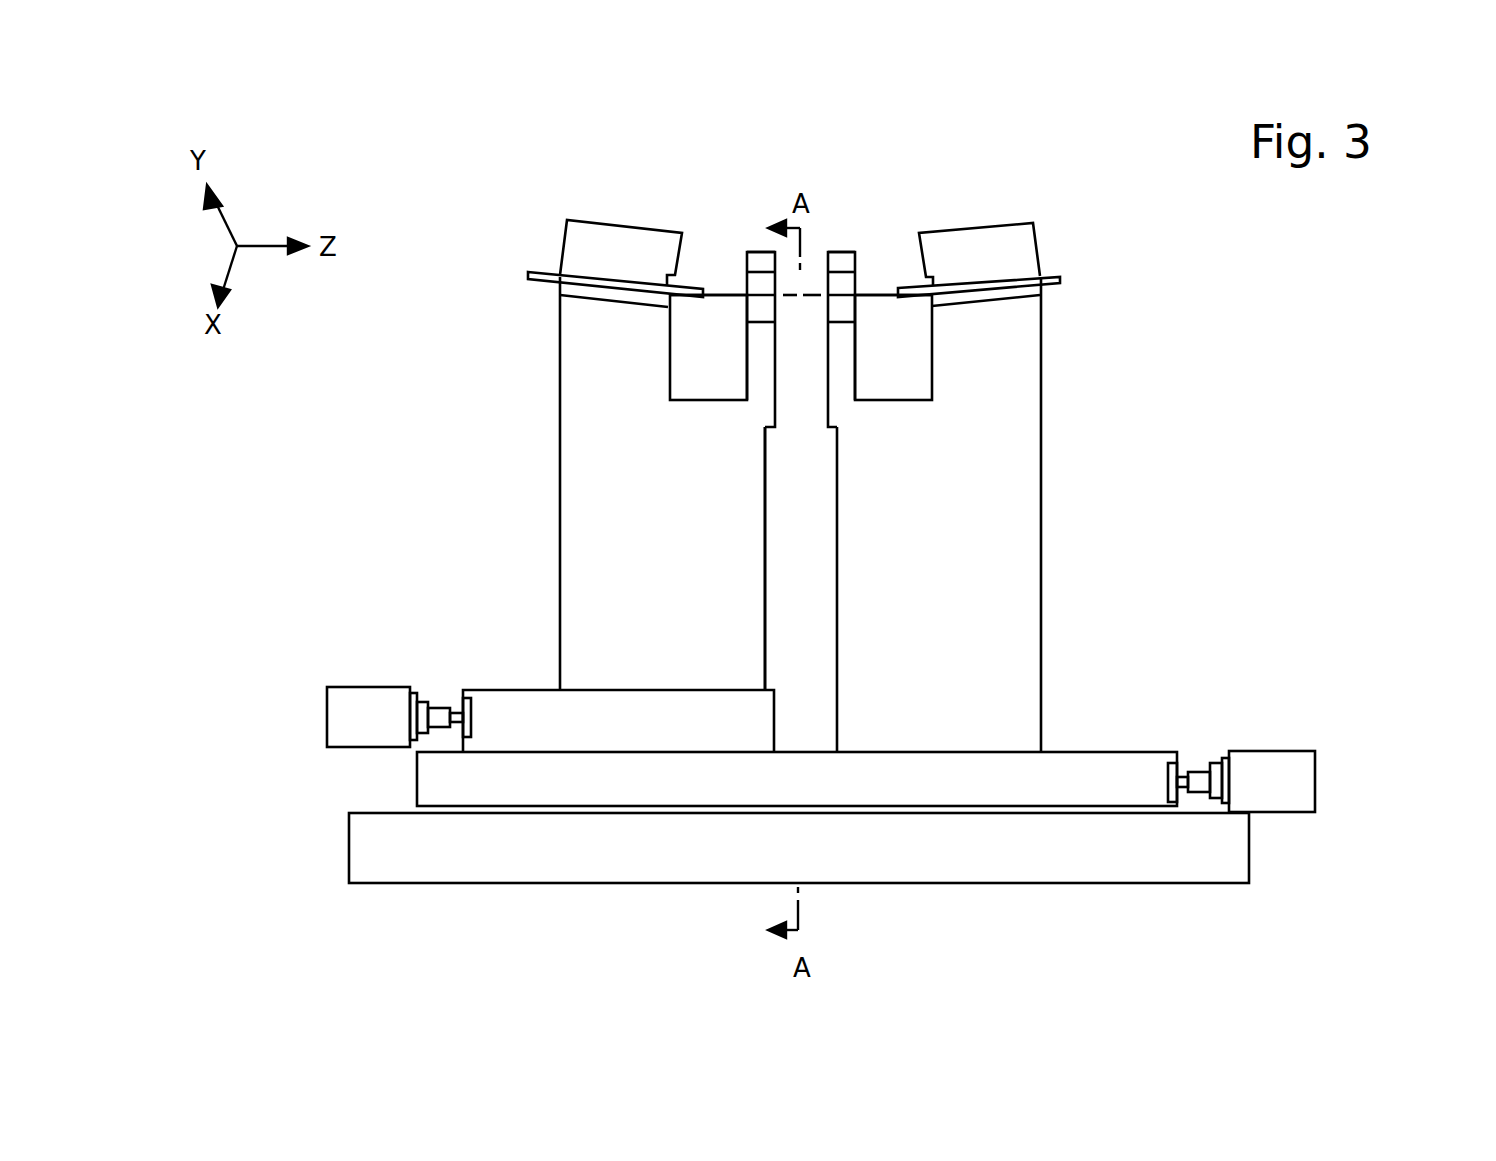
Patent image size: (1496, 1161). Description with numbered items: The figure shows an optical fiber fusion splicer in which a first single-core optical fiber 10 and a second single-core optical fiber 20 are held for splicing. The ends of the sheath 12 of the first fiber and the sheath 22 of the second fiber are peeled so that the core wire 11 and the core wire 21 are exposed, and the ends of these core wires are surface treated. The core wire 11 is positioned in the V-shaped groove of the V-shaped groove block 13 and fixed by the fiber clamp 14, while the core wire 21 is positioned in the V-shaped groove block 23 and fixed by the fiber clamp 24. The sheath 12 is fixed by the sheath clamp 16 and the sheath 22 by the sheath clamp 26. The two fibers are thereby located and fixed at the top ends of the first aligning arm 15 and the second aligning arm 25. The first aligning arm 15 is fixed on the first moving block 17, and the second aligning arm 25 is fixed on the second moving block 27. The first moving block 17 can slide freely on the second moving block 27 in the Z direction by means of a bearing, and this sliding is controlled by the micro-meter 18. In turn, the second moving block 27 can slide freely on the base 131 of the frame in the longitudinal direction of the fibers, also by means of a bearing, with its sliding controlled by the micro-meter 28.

The first single-core optical fiber 10 is at (712, 280).
The core wire 11 is at (719, 298).
The sheath 12 is at (540, 278).
The V-shaped groove block 13 is at (748, 297).
The fiber clamp 14 is at (758, 253).
The first aligning arm 15 is at (580, 467).
The sheath clamp 16 is at (563, 238).
The first moving block 17 is at (525, 690).
The micro-meter 18 is at (390, 608).
The second single-core optical fiber 20 is at (898, 303).
The core wire 21 is at (873, 297).
The sheath 22 is at (917, 297).
The V-shaped groove block 23 is at (835, 308).
The fiber clamp 24 is at (840, 253).
The second aligning arm 25 is at (1017, 465).
The sheath clamp 26 is at (1028, 225).
The second moving block 27 is at (1097, 752).
The micro-meter 28 is at (1255, 762).
The base 131 is at (932, 875).